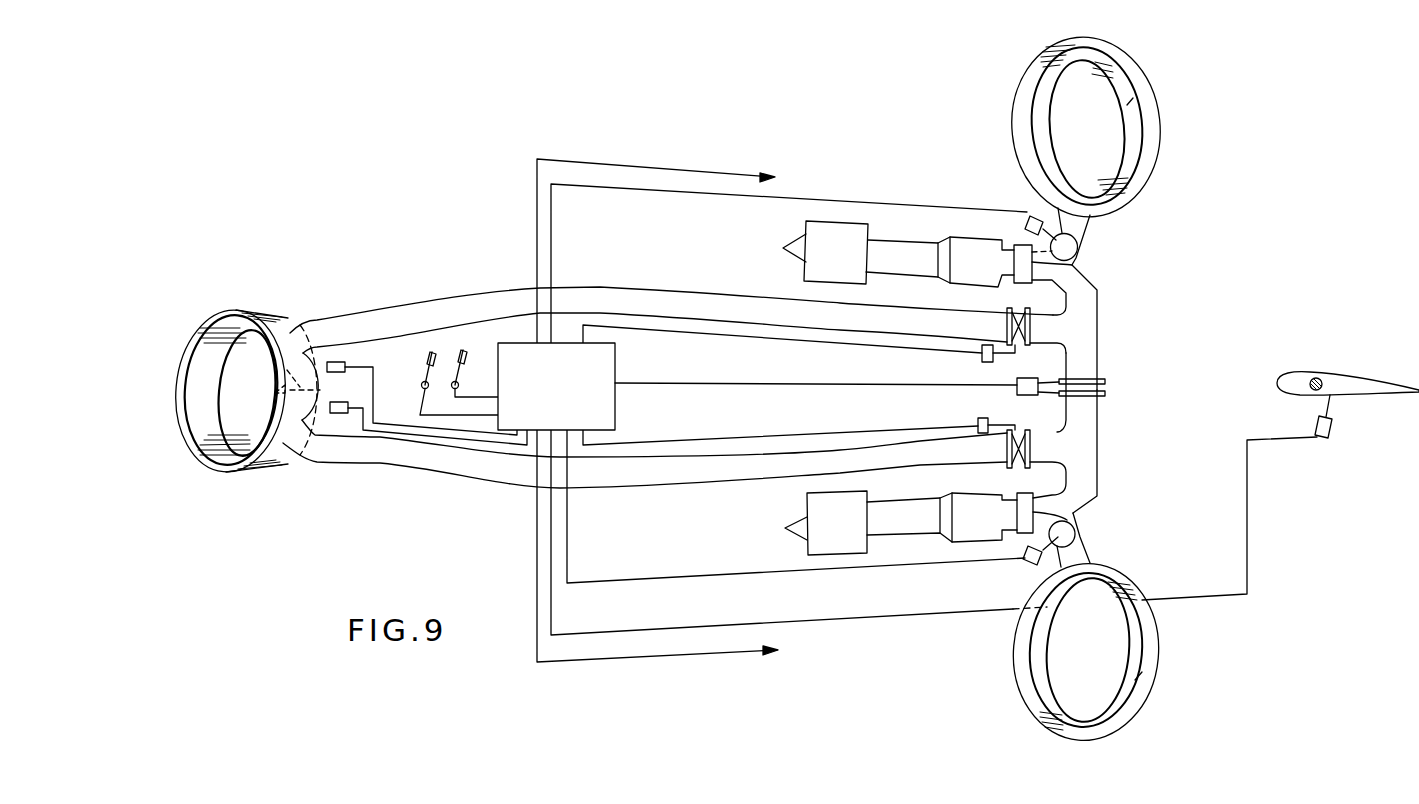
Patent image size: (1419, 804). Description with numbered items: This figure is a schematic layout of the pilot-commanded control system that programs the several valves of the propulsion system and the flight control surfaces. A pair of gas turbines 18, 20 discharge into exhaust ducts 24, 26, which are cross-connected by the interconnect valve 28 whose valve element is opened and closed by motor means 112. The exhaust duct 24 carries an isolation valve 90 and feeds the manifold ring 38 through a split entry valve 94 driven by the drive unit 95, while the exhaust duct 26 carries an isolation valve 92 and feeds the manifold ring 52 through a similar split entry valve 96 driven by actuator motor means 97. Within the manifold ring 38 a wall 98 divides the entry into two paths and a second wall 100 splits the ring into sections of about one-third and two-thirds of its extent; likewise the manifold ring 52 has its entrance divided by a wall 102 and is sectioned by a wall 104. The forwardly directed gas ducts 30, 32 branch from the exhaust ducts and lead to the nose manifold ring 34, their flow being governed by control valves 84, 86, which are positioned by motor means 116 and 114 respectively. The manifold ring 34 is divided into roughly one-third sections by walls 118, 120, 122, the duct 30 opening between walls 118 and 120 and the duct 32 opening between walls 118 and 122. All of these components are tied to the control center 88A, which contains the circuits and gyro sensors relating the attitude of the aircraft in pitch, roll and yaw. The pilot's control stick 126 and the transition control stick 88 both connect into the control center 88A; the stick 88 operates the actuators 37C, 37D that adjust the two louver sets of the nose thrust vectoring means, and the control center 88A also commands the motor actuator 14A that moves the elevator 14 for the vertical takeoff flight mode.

The elevator 14 is at (1372, 380).
The motor actuator 14A is at (1330, 438).
The gas turbine 18 is at (808, 538).
The gas turbine 20 is at (803, 230).
The exhaust duct 24 is at (1094, 440).
The exhaust duct 26 is at (1094, 325).
The interconnect valve 28 is at (1105, 390).
The gas duct 30 is at (447, 470).
The gas duct 32 is at (423, 317).
The manifold ring 34 is at (175, 373).
The actuator 37C is at (335, 362).
The actuator 37D is at (333, 417).
The manifold ring 38 is at (1025, 688).
The manifold ring 52 is at (1020, 107).
The control valve 84 is at (1003, 447).
The control valve 86 is at (1007, 330).
The transition control stick 88 is at (457, 347).
The control center 88A is at (615, 375).
The isolation valve 90 is at (1088, 510).
The isolation valve 92 is at (1078, 266).
The split entry valve 94 is at (1082, 533).
The drive unit 95 is at (1025, 560).
The split entry valve 96 is at (1080, 243).
The actuator motor means 97 is at (1032, 217).
The wall 98 is at (1073, 552).
The wall 100 is at (1135, 680).
The wall 102 is at (1066, 245).
The wall 104 is at (1127, 105).
The motor means 112 is at (1023, 395).
The motor means 114 is at (980, 357).
The motor means 116 is at (978, 423).
The wall 118 is at (287, 370).
The wall 120 is at (203, 460).
The wall 122 is at (220, 330).
The control stick 126 is at (423, 368).